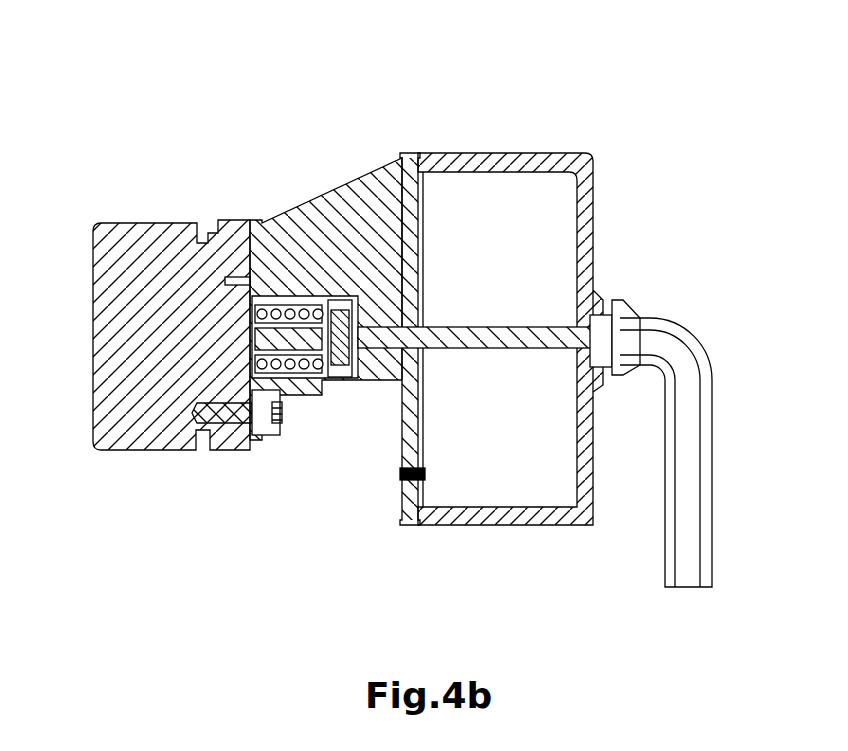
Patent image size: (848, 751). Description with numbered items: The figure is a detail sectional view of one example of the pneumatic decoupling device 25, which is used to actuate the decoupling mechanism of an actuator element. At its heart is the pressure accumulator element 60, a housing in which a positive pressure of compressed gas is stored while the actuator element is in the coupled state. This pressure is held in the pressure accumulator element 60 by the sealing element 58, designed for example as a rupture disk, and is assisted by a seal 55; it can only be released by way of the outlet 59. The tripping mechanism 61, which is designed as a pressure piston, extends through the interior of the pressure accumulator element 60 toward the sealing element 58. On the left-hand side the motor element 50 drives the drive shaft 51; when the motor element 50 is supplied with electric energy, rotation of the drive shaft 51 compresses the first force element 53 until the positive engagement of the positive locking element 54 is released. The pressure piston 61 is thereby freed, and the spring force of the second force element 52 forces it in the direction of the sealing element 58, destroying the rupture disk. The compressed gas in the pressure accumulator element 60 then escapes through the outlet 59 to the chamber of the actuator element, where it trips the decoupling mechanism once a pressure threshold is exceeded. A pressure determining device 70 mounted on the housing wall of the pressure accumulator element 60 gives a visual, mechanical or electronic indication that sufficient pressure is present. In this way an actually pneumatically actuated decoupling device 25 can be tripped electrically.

The decoupling device 25 is at (634, 110).
The motor element 50 is at (137, 265).
The drive shaft 51 is at (257, 337).
The second force element 52 is at (290, 312).
The first force element 53 is at (323, 382).
The positive locking element 54 is at (340, 303).
The seal 55 is at (407, 313).
The sealing element 58 is at (617, 333).
The outlet 59 is at (668, 515).
The pressure accumulator element 60 is at (510, 525).
The tripping mechanism 61 is at (510, 330).
The pressure determining device 70 is at (400, 490).